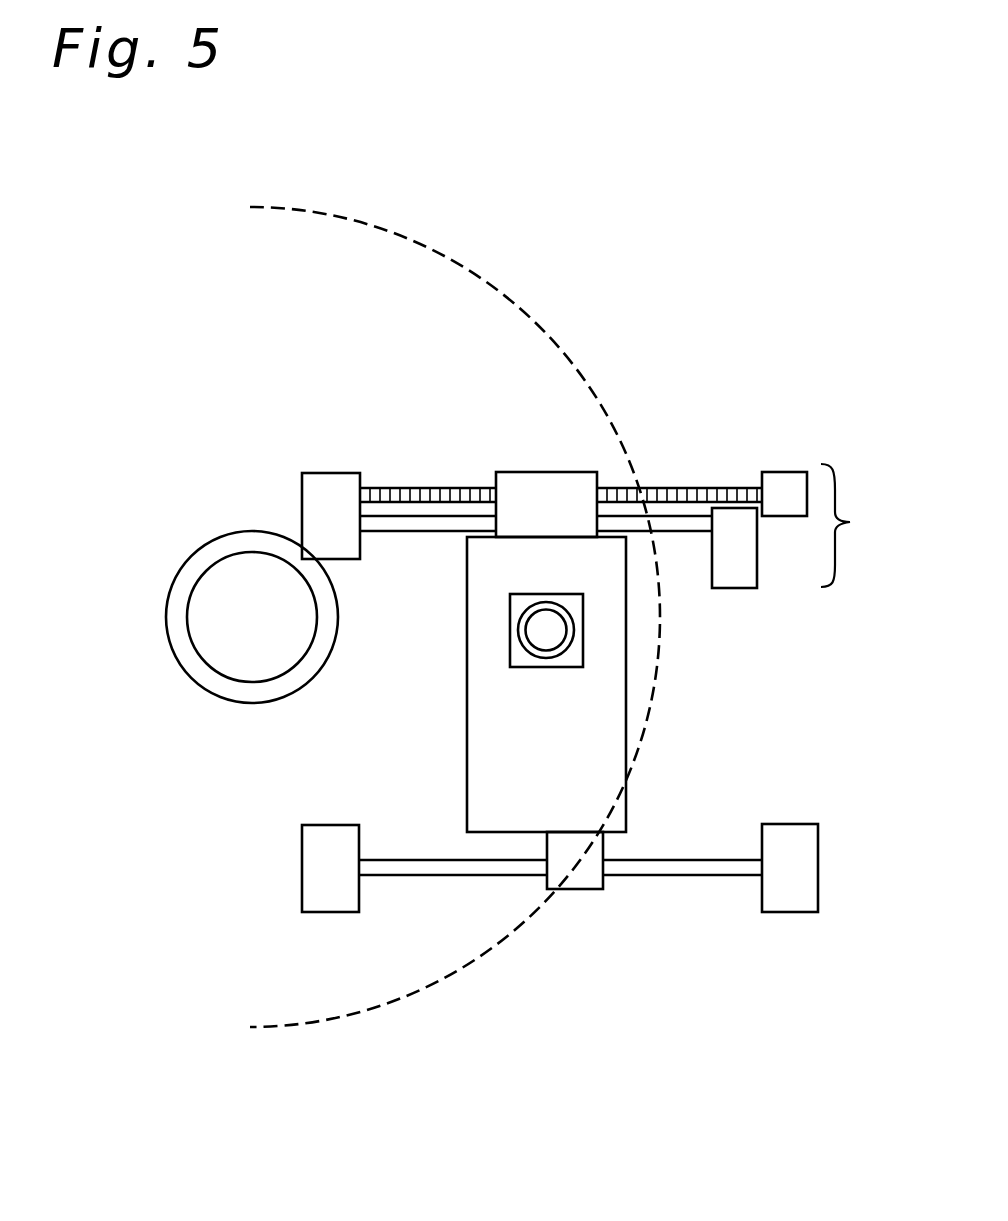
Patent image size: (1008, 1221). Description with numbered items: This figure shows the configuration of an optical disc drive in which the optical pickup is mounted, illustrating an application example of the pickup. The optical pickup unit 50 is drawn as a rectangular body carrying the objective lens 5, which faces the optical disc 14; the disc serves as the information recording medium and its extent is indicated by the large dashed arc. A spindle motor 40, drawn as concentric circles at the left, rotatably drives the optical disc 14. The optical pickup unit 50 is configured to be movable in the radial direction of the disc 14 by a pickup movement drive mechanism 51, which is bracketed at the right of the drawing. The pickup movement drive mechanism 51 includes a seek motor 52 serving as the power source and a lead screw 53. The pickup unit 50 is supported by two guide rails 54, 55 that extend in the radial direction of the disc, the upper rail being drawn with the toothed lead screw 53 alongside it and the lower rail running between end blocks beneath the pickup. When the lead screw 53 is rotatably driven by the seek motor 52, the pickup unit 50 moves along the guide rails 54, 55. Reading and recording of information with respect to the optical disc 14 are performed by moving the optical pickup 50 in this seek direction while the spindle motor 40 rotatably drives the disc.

The objective lens 5 is at (561, 630).
The optical disc 14 is at (417, 968).
The spindle motor 40 is at (208, 682).
The optical pickup unit 50 is at (603, 724).
The pickup movement drive mechanism 51 is at (861, 525).
The seek motor 52 is at (783, 472).
The lead screw 53 is at (660, 493).
The guide rail 54 is at (414, 523).
The guide rail 55 is at (660, 867).